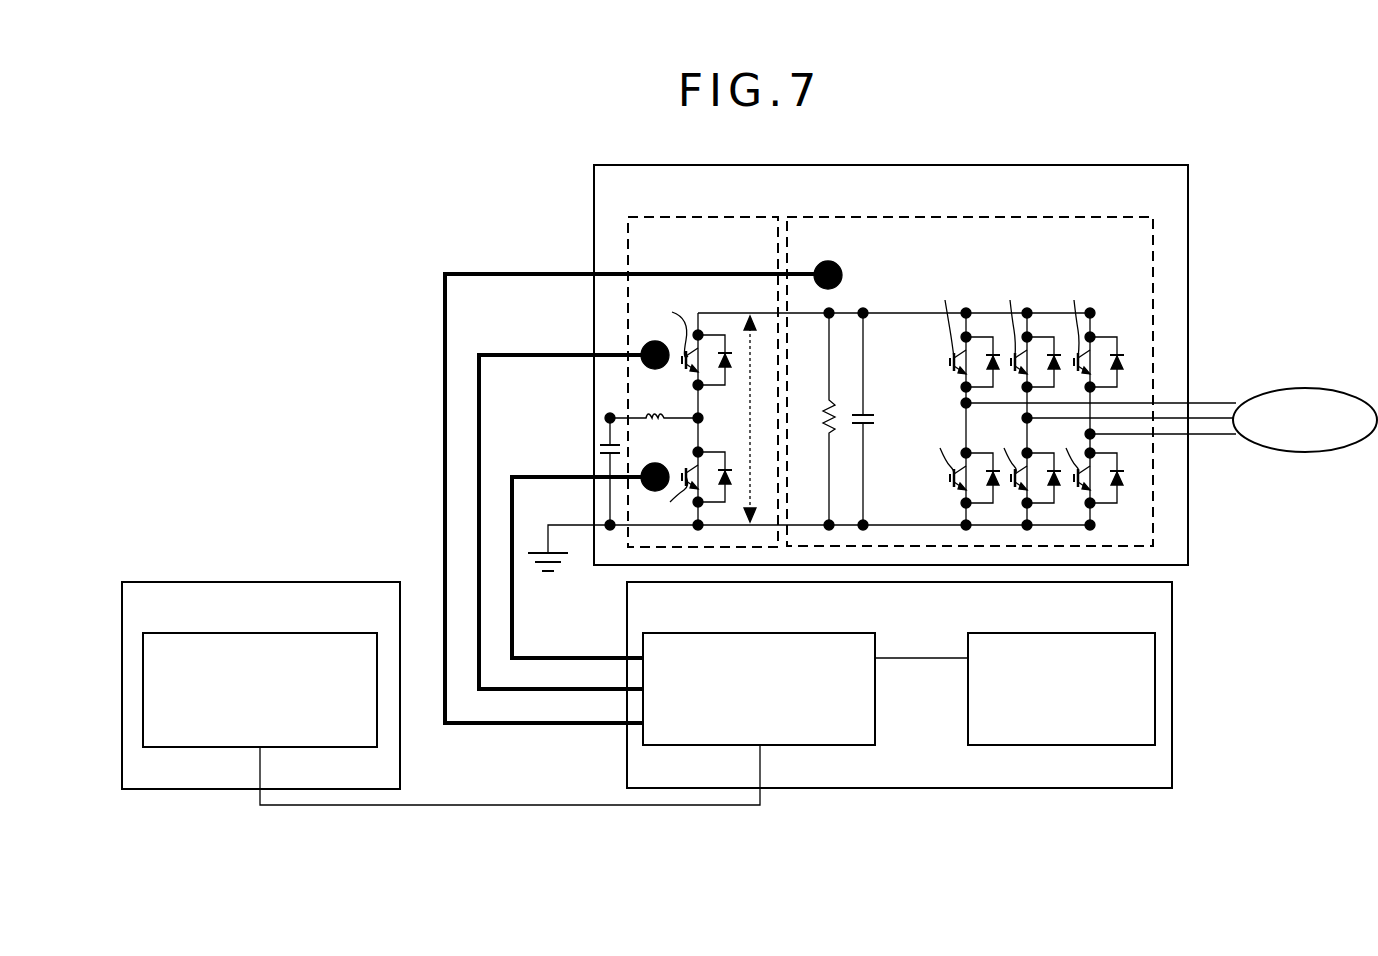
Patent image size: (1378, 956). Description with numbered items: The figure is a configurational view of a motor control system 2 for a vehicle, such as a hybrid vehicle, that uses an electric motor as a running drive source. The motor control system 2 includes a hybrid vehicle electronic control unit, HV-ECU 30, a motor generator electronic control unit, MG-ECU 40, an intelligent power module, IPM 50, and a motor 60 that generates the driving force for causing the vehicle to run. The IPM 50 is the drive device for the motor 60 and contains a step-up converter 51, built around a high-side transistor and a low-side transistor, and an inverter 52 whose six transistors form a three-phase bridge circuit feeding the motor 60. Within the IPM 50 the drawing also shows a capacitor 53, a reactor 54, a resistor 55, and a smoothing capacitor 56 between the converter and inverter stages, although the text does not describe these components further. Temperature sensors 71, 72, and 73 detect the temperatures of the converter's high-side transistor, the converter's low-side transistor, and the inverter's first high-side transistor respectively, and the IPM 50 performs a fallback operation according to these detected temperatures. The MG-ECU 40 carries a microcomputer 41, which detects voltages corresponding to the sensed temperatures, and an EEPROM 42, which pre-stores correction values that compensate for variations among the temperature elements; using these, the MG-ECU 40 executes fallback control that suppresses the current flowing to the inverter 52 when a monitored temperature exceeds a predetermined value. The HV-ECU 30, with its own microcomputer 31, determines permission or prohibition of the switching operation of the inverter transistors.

The motor control system 2 is at (302, 198).
The hybrid vehicle electronic control unit (HV-ECU) 30 is at (326, 582).
The microcomputer 31 is at (324, 633).
The motor generator electronic control unit (MG-ECU) 40 is at (1172, 634).
The microcomputer 41 is at (756, 633).
The EEPROM 42 is at (1064, 633).
The intelligent power module (IPM) 50 is at (1130, 165).
The step-up converter 51 is at (708, 217).
The inverter 52 is at (984, 218).
The capacitor 53 is at (603, 446).
The reactor 54 is at (654, 414).
The resistor 55 is at (828, 410).
The smoothing capacitor 56 is at (868, 414).
The motor 60 is at (1300, 389).
The temperature sensor 71 is at (650, 344).
The temperature sensor 72 is at (658, 466).
The temperature sensor 73 is at (834, 264).